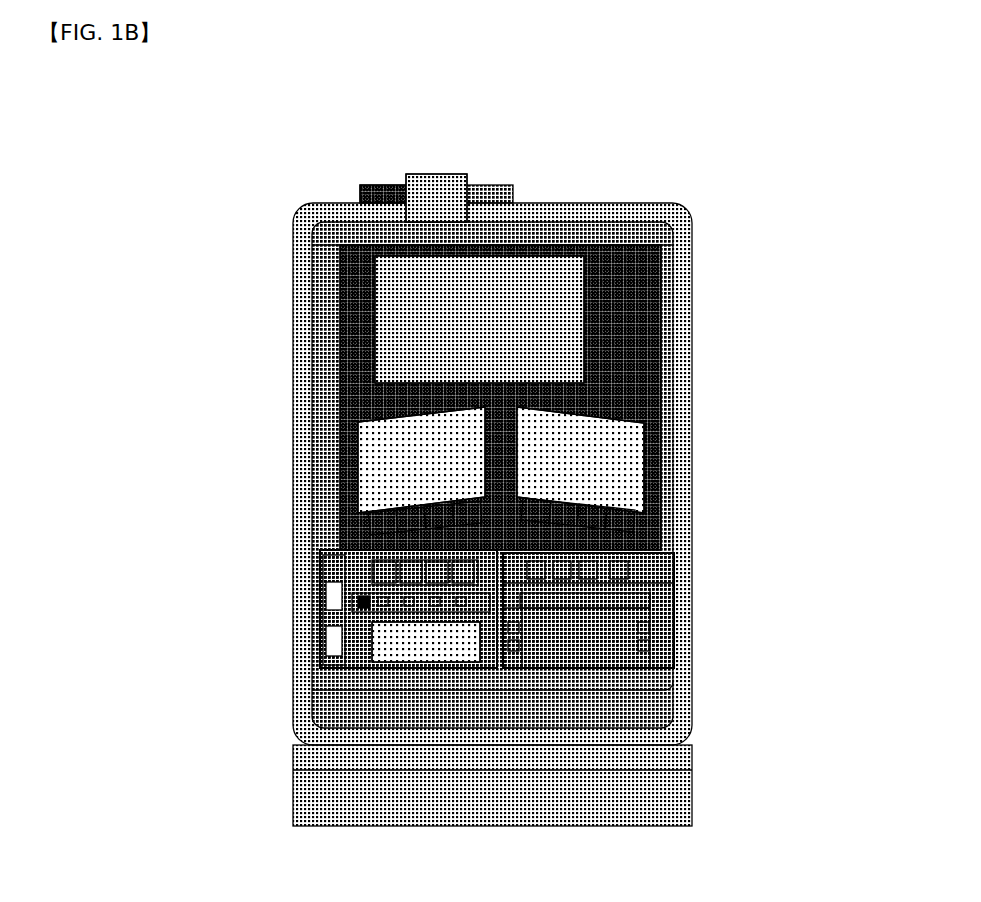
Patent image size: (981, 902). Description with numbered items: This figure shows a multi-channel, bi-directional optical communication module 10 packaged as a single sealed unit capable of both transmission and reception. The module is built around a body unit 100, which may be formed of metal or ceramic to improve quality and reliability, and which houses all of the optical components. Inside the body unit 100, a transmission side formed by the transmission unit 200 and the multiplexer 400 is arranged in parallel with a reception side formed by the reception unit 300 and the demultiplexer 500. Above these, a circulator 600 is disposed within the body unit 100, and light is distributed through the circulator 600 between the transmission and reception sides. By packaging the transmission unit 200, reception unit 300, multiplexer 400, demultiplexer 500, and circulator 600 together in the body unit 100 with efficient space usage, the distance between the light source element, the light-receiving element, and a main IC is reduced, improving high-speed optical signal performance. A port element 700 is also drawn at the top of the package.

The multi-channel, bi-directional optical communication module 10 is at (713, 198).
The body unit 100 is at (293, 262).
The transmission unit 200 is at (322, 585).
The reception unit 300 is at (675, 612).
The multiplexer 400 is at (358, 465).
The demultiplexer 500 is at (644, 462).
The circulator 600 is at (585, 330).
The optical connector / lid port 700 is at (467, 178).